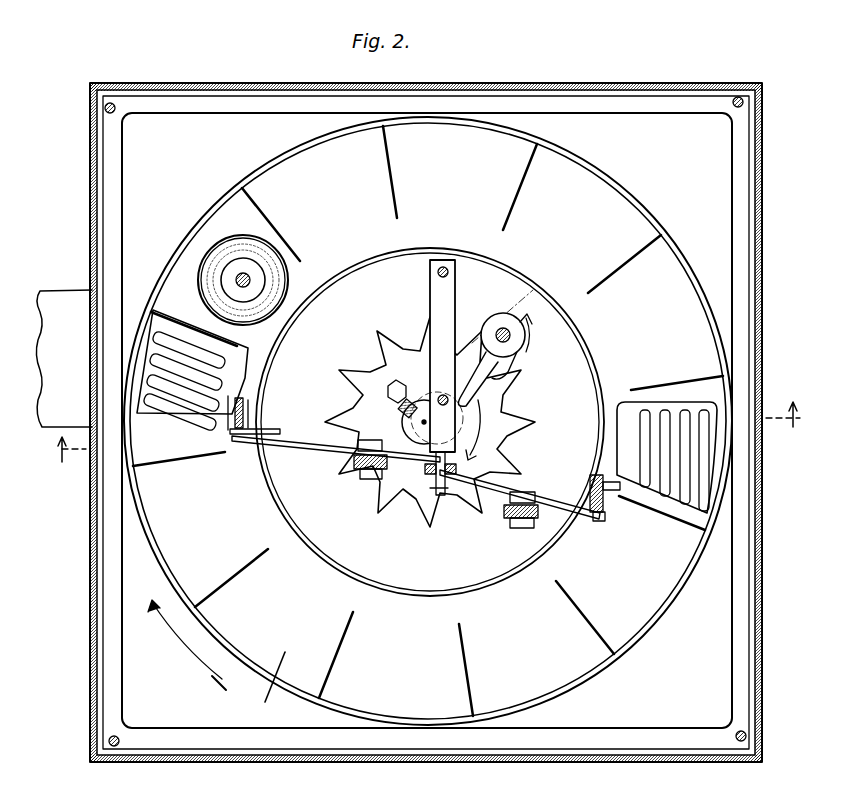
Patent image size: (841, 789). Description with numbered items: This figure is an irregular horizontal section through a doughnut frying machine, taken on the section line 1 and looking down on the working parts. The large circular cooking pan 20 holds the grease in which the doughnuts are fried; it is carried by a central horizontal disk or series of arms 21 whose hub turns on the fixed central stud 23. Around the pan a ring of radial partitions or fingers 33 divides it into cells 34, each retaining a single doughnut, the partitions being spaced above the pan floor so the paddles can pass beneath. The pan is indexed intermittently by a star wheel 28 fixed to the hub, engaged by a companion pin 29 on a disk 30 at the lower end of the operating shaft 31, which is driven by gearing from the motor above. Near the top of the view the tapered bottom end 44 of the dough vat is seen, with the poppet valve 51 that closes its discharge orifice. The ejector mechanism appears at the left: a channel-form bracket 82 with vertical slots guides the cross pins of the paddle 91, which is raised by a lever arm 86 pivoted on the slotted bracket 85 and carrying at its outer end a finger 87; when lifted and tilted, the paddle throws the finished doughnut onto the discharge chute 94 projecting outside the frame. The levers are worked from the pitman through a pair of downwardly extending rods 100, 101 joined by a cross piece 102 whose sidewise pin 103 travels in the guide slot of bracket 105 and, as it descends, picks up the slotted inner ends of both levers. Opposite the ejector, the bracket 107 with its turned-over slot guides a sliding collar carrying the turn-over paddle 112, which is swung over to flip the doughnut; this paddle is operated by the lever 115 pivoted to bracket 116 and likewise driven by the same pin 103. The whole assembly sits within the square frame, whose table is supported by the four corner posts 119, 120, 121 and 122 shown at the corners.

The section line 1 is at (422, 433).
The cooking pan 20 is at (665, 630).
The disk or series of arms 21 is at (286, 506).
The central stud 23 is at (402, 424).
The star wheel 28 is at (500, 438).
The pin 29 is at (510, 366).
The disk 30 is at (500, 318).
The operating shaft 31 is at (536, 300).
The radial partitions or fingers 33 is at (236, 578).
The cells 34 is at (360, 682).
The tapered bottom end 44 is at (289, 276).
The poppet valve 51 is at (236, 281).
The bracket 82 is at (256, 430).
The bracket 85 is at (365, 480).
The lever arm 86 is at (304, 450).
The finger 87 is at (238, 432).
The paddle 91 is at (150, 414).
The discharge chute 94 is at (64, 358).
The rod 100 is at (438, 270).
The rod 101 is at (438, 396).
The cross piece 102 is at (440, 290).
The pin 103 is at (448, 495).
The bracket 105 is at (432, 478).
The bracket 107 is at (600, 514).
The turn-over paddle 112 is at (630, 406).
The lever 115 is at (548, 503).
The bracket 116 is at (513, 520).
The corner post 119 is at (102, 748).
The corner post 120 is at (757, 732).
The corner post 121 is at (752, 100).
The corner post 122 is at (104, 107).